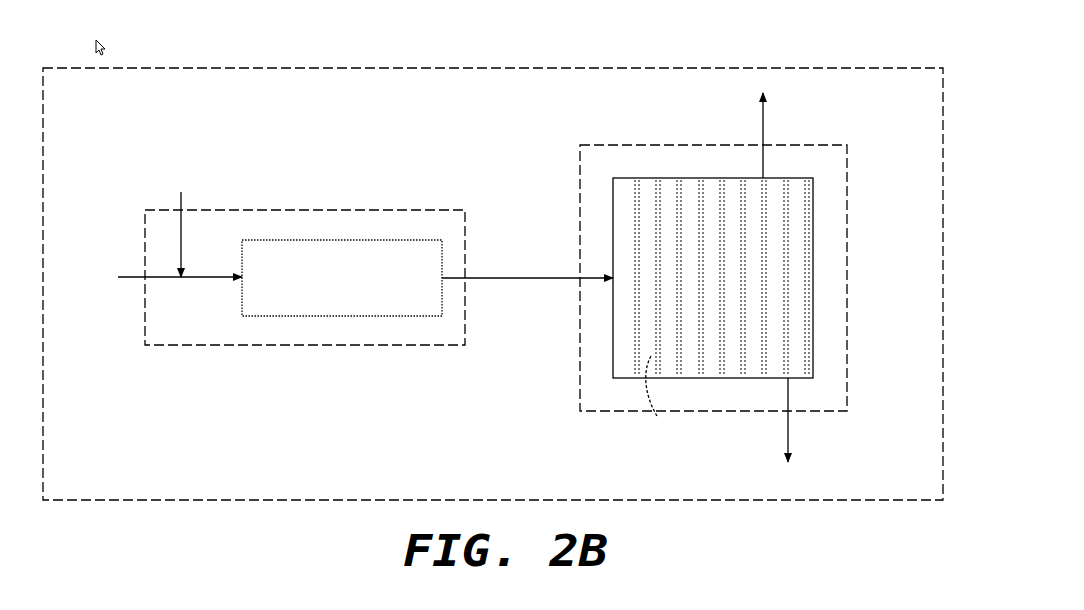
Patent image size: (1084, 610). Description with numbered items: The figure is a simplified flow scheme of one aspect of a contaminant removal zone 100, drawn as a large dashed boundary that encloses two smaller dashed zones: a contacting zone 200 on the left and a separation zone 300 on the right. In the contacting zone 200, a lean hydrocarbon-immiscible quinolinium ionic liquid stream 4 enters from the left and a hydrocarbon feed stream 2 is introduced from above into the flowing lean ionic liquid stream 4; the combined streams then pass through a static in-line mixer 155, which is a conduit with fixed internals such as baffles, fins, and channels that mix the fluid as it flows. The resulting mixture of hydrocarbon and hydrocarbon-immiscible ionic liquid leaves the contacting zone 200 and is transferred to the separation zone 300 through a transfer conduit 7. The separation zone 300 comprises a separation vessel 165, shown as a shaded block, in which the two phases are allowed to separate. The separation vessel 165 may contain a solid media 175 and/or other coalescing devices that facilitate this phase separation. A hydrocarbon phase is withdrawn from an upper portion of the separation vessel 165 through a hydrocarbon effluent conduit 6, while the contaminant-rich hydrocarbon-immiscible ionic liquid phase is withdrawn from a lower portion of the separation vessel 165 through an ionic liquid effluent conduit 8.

The contaminant removal zone 100 is at (501, 274).
The contacting zone 200 is at (316, 267).
The separation zone 300 is at (727, 269).
The static in-line mixer 155 is at (342, 278).
The separation vessel 165 is at (713, 278).
The solid media 175 is at (648, 397).
The hydrocarbon feed stream 2 is at (181, 223).
The lean hydrocarbon-immiscible quinolinium ionic liquid stream 4 is at (171, 277).
The hydrocarbon effluent conduit 6 is at (763, 124).
The transfer conduit 7 is at (527, 267).
The ionic liquid effluent conduit 8 is at (788, 430).